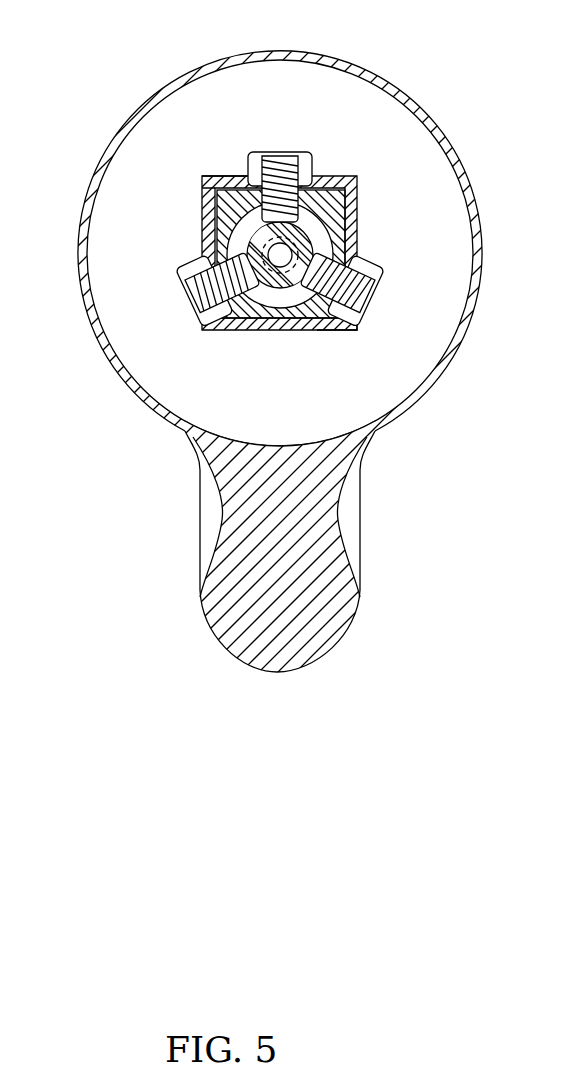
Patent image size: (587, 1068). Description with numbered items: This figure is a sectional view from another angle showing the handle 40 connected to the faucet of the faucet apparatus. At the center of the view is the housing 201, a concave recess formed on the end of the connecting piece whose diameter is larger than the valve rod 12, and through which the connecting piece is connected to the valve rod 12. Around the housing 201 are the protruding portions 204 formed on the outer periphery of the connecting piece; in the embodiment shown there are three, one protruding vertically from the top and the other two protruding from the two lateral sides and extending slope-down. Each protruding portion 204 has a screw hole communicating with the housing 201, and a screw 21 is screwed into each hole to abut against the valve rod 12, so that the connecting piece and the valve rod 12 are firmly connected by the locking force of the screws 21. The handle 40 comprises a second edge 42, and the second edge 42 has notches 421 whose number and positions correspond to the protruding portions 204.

The handle 40 is at (370, 450).
The second edge 42 is at (203, 222).
The notch 421 is at (250, 183).
The housing 201 is at (357, 193).
The protruding portion 204 is at (303, 147).
The screw 21 is at (273, 170).
The valve rod 12 is at (373, 317).